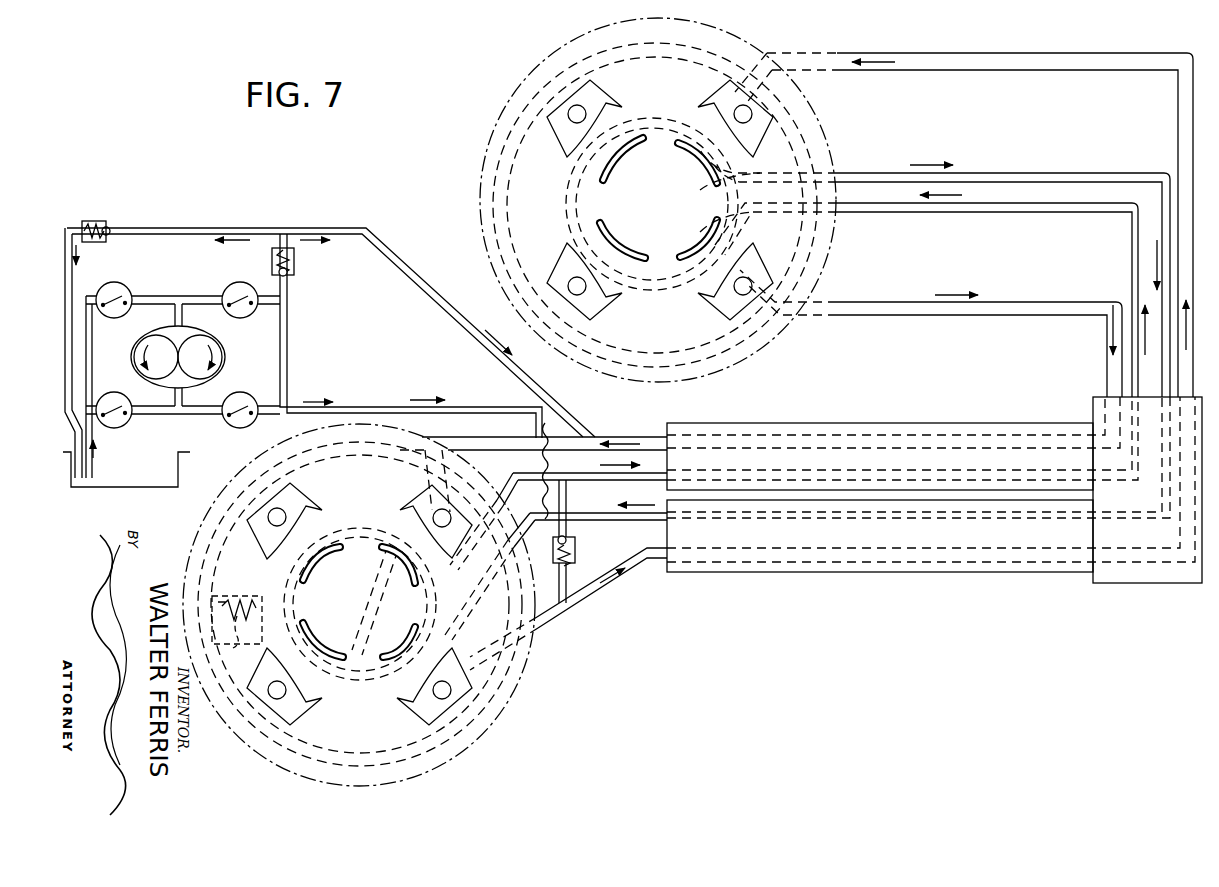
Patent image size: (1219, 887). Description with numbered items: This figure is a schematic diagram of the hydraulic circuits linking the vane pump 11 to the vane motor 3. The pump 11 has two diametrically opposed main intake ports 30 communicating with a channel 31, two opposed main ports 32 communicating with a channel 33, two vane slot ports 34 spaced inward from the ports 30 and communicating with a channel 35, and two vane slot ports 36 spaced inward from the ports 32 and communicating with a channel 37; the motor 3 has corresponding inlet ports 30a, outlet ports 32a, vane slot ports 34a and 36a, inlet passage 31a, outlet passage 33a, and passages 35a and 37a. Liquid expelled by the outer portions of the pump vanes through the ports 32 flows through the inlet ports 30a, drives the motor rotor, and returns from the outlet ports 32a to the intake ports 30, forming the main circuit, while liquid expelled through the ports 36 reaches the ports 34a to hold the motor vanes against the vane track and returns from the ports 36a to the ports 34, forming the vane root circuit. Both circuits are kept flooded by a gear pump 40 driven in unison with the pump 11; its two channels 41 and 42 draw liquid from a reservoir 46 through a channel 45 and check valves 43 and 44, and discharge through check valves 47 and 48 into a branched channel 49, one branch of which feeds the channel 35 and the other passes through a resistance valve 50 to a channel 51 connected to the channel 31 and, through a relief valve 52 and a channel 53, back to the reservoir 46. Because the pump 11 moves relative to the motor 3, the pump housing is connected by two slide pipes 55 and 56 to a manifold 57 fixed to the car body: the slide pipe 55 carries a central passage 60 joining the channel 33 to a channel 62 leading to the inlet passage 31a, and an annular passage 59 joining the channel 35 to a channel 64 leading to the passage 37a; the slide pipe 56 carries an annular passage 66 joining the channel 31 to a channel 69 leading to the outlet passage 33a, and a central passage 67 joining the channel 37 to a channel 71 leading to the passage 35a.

The motor 3 is at (422, 205).
The pump 11 is at (578, 665).
The main ports 30 is at (432, 510).
The inlet ports 30a is at (748, 132).
The channel 31 is at (226, 503).
The inlet passage 31a is at (665, 82).
The main ports 32 is at (290, 500).
The outlet ports 32a is at (592, 75).
The channel 33 is at (372, 728).
The outlet passage 33a is at (510, 112).
The vane slot ports 34 is at (404, 566).
The vane slot ports 34a is at (708, 168).
The channel 35 is at (380, 572).
The passage 35a is at (805, 212).
The vane slot ports 36 is at (318, 560).
The vane slot ports 36a is at (618, 172).
The channel 37 is at (374, 528).
The passage 37a is at (800, 175).
The gear pump 40 is at (222, 357).
The channel 41 is at (192, 294).
The channel 42 is at (196, 416).
The check valve 43 is at (126, 291).
The check valve 44 is at (120, 430).
The channel 45 is at (88, 360).
The reservoir 46 is at (128, 487).
The check valve 47 is at (250, 292).
The check valve 48 is at (248, 398).
The branched channel 49 is at (290, 322).
The resistance valve 50 is at (300, 262).
The channel 51 is at (228, 234).
The relief valve 52 is at (97, 222).
The channel 53 is at (72, 283).
The slide pipe 55 is at (722, 572).
The slide pipe 56 is at (748, 428).
The manifold 57 is at (1128, 575).
The annular passage 59 is at (806, 522).
The central passage 60 is at (840, 568).
The channel 62 is at (1010, 62).
The channel 64 is at (1026, 182).
The annular passage 66 is at (831, 432).
The central passage 67 is at (822, 472).
The channel 69 is at (1038, 309).
The channel 71 is at (1032, 212).